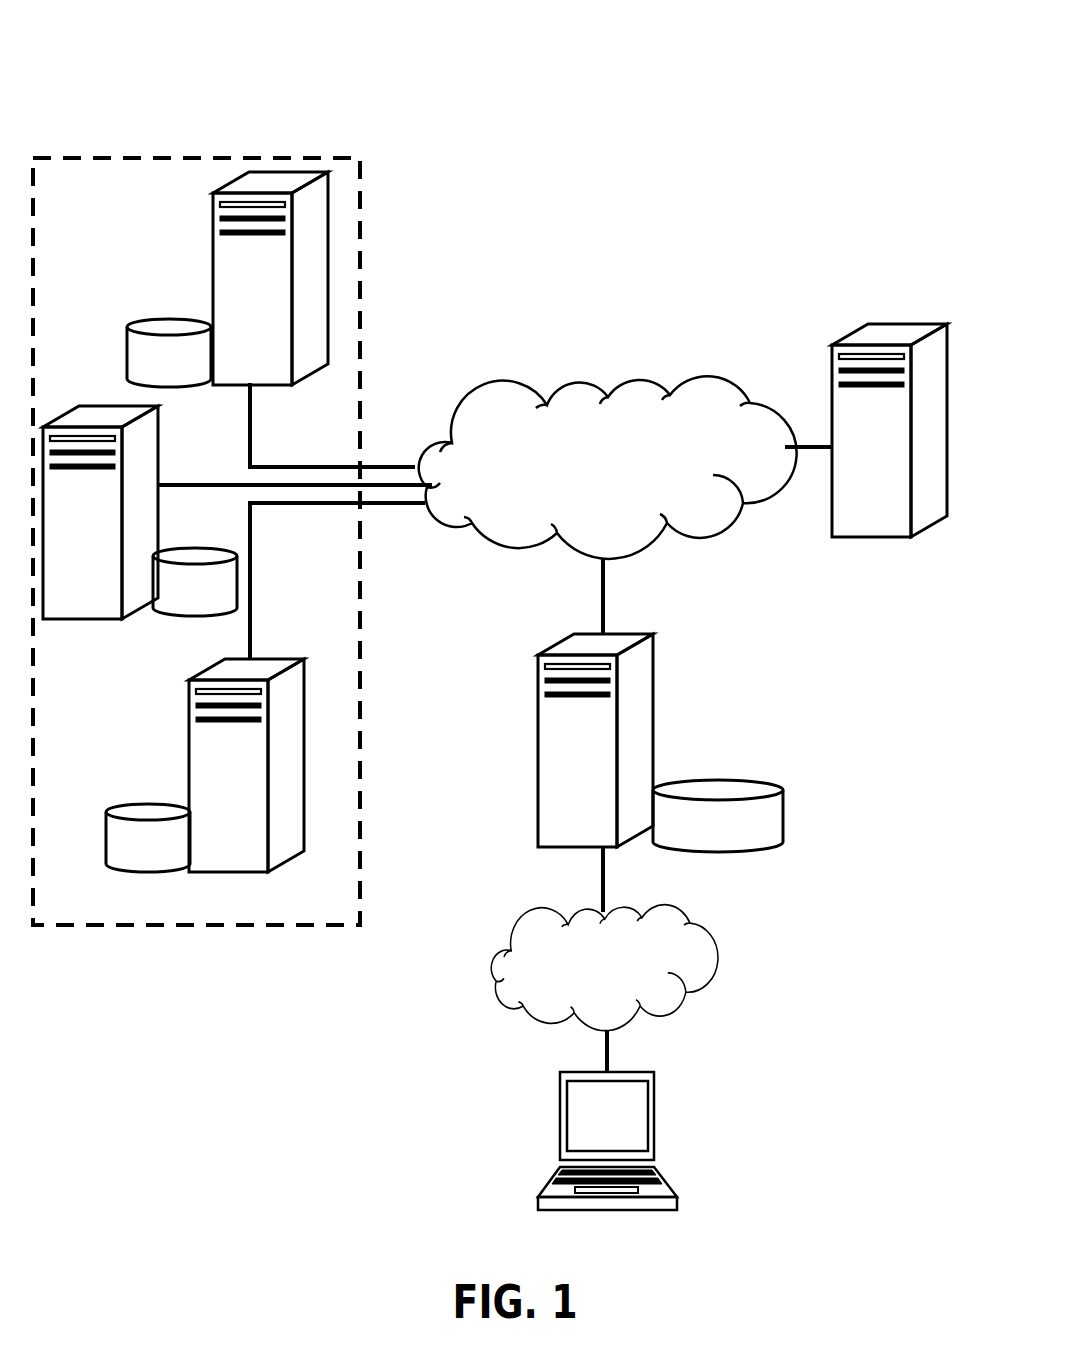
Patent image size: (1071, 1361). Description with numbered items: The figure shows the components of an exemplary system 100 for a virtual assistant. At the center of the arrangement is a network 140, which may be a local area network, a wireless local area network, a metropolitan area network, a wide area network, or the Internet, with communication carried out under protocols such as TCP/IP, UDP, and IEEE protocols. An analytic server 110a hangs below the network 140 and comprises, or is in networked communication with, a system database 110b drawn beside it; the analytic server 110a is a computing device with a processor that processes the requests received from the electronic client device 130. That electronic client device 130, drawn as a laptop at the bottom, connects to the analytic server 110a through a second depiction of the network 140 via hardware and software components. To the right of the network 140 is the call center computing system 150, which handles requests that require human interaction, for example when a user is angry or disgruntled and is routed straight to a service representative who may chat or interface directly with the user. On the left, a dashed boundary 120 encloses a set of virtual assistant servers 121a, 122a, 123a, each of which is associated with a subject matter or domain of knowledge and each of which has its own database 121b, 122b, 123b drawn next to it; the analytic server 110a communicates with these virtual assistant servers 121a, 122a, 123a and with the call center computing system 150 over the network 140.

The system 100 is at (113, 58).
The server cluster / data center 120 is at (196, 541).
The virtual assistant server 121a is at (270, 278).
The database 121b is at (169, 353).
The virtual assistant server 122a is at (100, 512).
The database 122b is at (195, 582).
The virtual assistant server 123a is at (246, 765).
The database 123b is at (148, 838).
The network 140 is at (608, 703).
The call center computing system 150 is at (889, 430).
The analytic server 110a is at (595, 740).
The system database 110b is at (718, 816).
The electronic client device 130 is at (607, 1141).